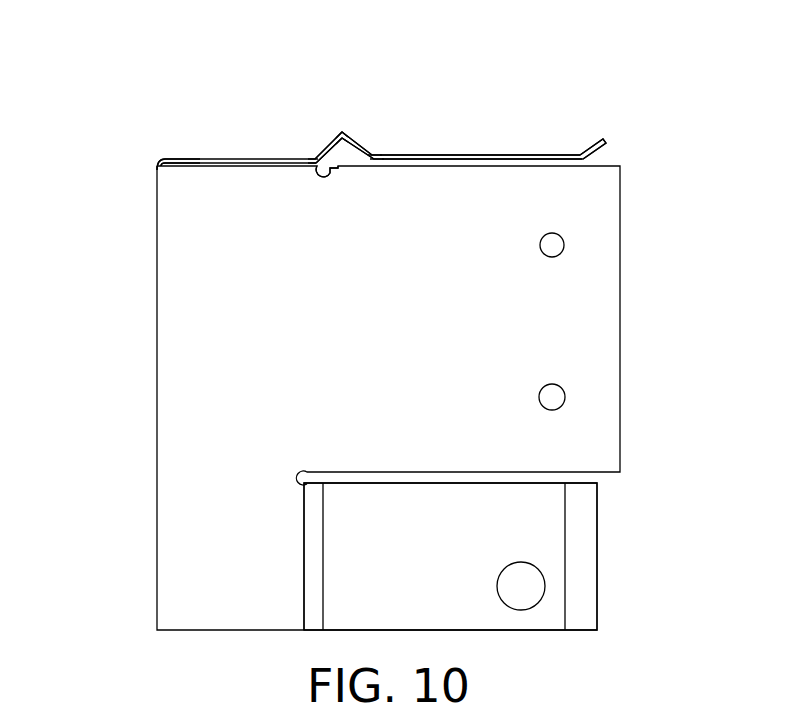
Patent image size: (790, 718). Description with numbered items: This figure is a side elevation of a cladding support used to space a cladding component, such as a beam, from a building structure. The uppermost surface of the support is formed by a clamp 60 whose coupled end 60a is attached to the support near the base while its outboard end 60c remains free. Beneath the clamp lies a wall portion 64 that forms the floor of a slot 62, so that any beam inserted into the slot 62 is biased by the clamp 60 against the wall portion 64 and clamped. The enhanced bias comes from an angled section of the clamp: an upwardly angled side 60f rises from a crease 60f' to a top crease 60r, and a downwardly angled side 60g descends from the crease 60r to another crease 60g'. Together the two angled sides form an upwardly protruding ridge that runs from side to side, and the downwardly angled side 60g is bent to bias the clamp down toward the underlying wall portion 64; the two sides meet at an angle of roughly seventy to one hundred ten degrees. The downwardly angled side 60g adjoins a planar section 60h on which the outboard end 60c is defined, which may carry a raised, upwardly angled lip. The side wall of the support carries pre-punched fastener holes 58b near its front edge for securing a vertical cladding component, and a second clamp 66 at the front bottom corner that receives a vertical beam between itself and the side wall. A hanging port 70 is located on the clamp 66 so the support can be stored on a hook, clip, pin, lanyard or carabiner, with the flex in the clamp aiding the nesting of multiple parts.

The pre-punched fastener holes 58b is at (556, 397).
The clamp 60 is at (211, 150).
The coupled end 60a is at (160, 160).
The outboard end 60c is at (598, 150).
The upwardly angled side 60f is at (288, 120).
The crease 60f' is at (275, 140).
The downwardly angled side 60g is at (399, 118).
The crease 60g' is at (425, 138).
The planar section 60h is at (525, 155).
The crease 60r is at (342, 132).
The slot 62 is at (598, 158).
The wall portion 64 is at (343, 170).
The clamp 66 is at (587, 538).
The hanging port 70 is at (530, 586).